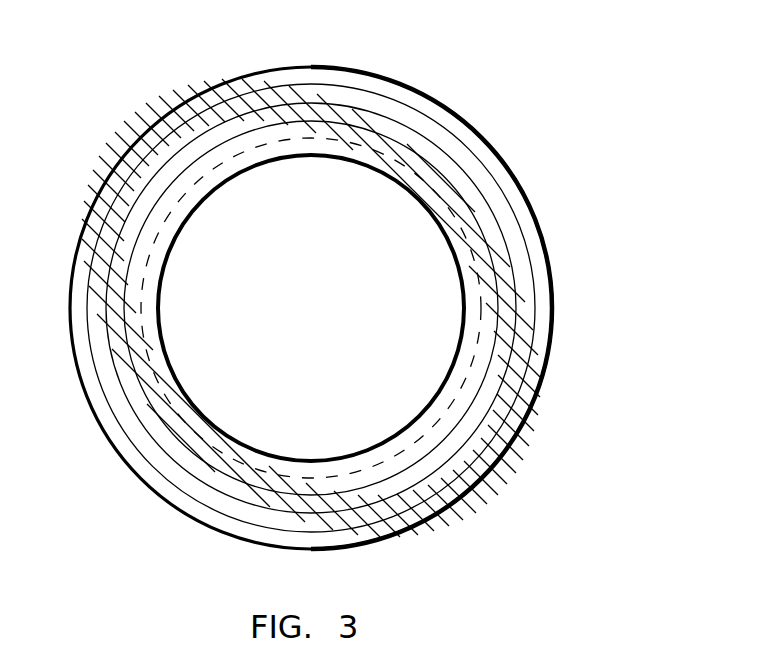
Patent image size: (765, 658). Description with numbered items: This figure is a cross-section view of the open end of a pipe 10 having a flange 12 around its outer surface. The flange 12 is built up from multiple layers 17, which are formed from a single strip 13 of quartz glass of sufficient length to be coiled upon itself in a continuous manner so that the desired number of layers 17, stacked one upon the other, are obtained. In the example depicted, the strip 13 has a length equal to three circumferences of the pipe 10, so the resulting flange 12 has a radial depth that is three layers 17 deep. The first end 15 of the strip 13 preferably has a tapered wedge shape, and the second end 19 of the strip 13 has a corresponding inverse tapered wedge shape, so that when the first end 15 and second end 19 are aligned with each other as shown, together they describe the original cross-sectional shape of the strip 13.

The pipe 10 is at (453, 402).
The flange 12 is at (137, 137).
The strip 13 is at (289, 97).
The first end 15 is at (460, 188).
The layers 17 is at (512, 283).
The second end 19 is at (433, 97).